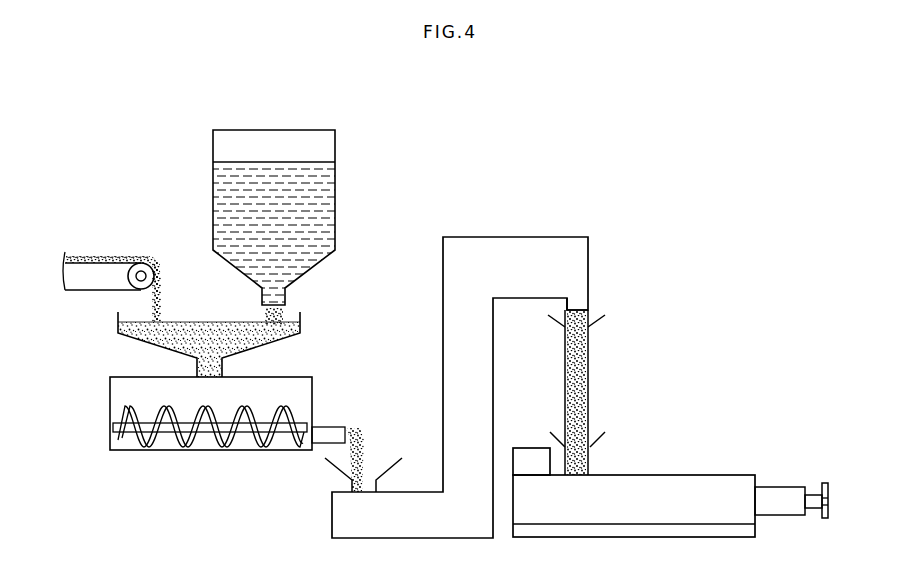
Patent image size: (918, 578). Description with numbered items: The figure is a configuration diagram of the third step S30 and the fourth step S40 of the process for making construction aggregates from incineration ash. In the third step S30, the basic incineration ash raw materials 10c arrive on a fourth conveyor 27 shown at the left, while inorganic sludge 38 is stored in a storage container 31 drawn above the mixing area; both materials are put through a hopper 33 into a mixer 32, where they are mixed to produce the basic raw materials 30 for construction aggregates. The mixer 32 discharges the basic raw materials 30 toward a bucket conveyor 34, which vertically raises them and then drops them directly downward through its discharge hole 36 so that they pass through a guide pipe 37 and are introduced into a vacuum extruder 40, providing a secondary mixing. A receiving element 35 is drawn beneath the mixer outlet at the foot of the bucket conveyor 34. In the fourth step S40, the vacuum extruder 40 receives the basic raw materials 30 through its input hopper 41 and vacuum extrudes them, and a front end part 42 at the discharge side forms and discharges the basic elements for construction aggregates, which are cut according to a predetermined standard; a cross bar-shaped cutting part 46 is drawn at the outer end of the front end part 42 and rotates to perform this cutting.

The basic incineration ash raw materials 10c is at (112, 257).
The fourth conveyor 27 is at (83, 280).
The basic raw materials for construction aggregates 30 is at (363, 435).
The storage container 31 is at (337, 145).
The mixer 32 is at (108, 437).
The hopper 33 is at (137, 340).
The bucket conveyor 34 is at (443, 305).
The receiving hopper 35 is at (342, 467).
The discharge hole 36 is at (578, 303).
The guide pipe 37 is at (590, 362).
The inorganic sludge 38 is at (317, 207).
The vacuum extruder 40 is at (710, 477).
The input hopper 41 is at (597, 438).
The front end part 42 is at (815, 485).
The cross bar-shaped cutting part 46 is at (825, 483).
The third step S30 is at (160, 172).
The fourth step S40 is at (707, 365).